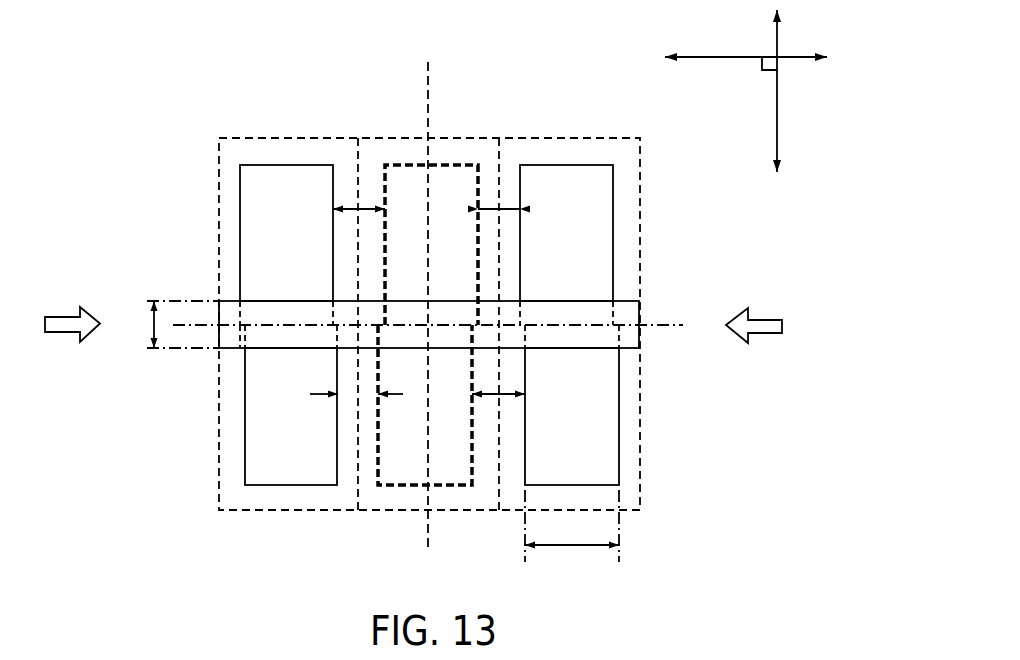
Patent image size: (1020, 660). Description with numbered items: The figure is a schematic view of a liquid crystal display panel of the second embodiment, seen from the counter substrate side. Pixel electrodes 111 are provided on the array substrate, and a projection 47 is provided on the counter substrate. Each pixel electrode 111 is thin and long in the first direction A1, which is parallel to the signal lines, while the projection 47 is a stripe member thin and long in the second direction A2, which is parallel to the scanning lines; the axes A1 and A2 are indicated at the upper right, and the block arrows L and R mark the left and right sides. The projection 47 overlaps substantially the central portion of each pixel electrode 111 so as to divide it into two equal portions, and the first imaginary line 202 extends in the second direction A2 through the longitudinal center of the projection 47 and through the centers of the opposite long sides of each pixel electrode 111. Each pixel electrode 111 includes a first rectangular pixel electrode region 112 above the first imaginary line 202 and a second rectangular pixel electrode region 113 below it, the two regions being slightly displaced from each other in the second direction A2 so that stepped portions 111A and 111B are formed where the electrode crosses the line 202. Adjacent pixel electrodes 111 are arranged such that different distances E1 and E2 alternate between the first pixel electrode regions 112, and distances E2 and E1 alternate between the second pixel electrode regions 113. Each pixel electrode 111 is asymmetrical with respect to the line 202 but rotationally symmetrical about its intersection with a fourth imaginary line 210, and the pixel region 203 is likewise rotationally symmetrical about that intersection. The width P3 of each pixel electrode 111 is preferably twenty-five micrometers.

The projection 47 is at (622, 312).
The pixel electrode 111 is at (426, 331).
The stepped portion 111A is at (232, 338).
The stepped portion 111B is at (337, 300).
The first rectangular pixel electrode region 112 is at (253, 192).
The second rectangular pixel electrode region 113 is at (426, 452).
The first imaginary line 202 is at (676, 330).
The pixel region 203 is at (403, 495).
The fourth imaginary line 210 is at (428, 85).
The distance E1 is at (353, 205).
The distance E2 is at (508, 205).
The width of pixel electrode P3 is at (572, 548).
The first direction A1 is at (777, 122).
The second direction A2 is at (720, 57).
The left direction L is at (64, 324).
The right direction R is at (767, 325).